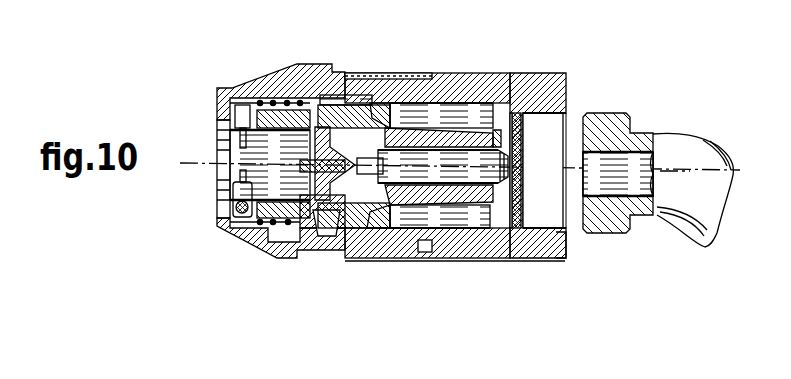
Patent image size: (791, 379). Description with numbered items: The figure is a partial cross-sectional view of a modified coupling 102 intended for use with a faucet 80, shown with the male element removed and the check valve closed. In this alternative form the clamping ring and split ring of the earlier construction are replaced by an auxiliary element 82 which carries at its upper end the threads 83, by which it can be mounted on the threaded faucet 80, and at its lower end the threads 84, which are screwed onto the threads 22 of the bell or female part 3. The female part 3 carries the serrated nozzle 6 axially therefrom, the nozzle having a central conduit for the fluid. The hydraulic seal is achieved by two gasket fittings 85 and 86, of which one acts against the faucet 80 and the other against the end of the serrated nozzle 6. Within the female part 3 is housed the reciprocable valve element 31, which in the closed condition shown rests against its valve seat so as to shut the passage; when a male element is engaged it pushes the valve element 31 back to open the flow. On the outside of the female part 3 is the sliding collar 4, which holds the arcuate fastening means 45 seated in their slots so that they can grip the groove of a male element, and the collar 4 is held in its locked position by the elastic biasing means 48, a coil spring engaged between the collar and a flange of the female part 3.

The modified coupling 102 is at (493, 287).
The sliding collar 4 is at (286, 257).
The elastic or biasing means 48 is at (256, 100).
The fastening means 45 is at (242, 218).
The valve element 31 is at (338, 248).
The bell or female part 3 is at (389, 258).
The threads 84 is at (414, 72).
The threads 22 is at (426, 252).
The gasket fitting 86 is at (498, 130).
The serrated nozzle 6 is at (451, 193).
The gasket fitting 85 is at (517, 222).
The threads 83 is at (553, 112).
The auxiliary element 82 is at (567, 246).
The faucet 80 is at (674, 204).